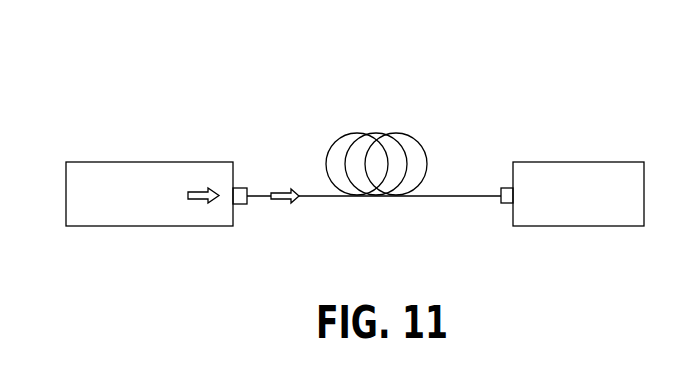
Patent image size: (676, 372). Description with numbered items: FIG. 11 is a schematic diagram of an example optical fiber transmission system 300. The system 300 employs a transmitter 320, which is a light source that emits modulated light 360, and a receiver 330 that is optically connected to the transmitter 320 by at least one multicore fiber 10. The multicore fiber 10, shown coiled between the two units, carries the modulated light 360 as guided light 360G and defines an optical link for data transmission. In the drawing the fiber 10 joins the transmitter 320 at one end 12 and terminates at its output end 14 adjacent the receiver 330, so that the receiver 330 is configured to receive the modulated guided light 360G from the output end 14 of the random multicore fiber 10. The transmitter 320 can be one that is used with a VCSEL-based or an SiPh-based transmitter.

The optical fiber transmission system 300 is at (140, 73).
The transmitter 320 is at (157, 204).
The receiver 330 is at (597, 205).
The modulated light 360 is at (196, 191).
The guided light 360G is at (283, 189).
The multicore fiber 10 is at (410, 138).
The first fiber end connector 12 is at (248, 204).
The output end 14 is at (496, 200).